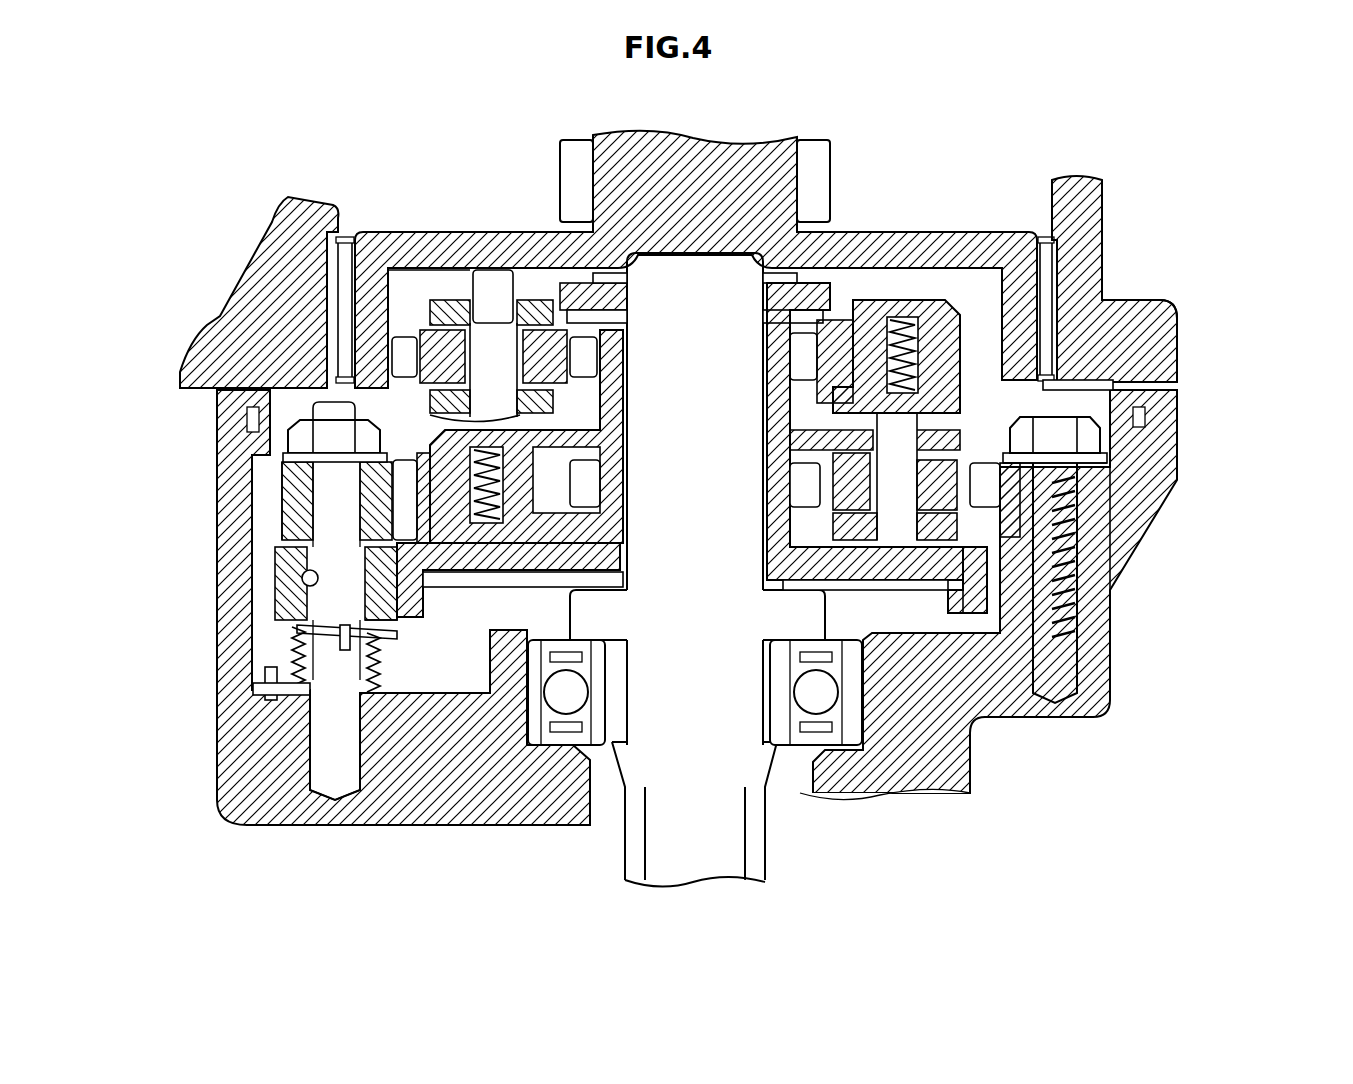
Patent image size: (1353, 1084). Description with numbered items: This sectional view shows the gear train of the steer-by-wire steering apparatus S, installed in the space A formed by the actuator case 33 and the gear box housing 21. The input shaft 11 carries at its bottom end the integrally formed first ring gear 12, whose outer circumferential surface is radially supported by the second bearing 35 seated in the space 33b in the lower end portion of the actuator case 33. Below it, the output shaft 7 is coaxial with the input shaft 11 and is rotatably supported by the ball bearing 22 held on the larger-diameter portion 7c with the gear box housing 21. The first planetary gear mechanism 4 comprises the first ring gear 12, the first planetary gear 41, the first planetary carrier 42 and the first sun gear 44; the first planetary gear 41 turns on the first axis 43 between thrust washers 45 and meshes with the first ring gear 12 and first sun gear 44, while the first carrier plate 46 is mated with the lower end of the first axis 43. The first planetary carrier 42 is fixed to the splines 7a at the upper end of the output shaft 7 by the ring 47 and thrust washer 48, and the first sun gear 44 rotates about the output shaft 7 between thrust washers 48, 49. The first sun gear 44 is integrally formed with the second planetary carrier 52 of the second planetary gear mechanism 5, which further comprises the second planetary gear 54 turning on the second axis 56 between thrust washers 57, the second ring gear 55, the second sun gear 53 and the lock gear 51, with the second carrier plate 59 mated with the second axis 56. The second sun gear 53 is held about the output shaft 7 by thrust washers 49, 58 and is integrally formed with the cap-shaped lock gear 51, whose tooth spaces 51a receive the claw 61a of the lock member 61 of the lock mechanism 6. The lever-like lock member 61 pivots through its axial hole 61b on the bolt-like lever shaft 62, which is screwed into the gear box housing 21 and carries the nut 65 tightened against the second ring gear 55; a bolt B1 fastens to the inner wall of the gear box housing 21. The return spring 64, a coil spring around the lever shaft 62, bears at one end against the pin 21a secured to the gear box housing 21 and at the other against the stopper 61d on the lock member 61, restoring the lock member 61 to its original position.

The first planetary gear mechanism 4 is at (497, 298).
The first sun gear 44 is at (403, 350).
The first planetary gear 41 is at (428, 350).
The first ring gear 12 is at (405, 298).
The first planetary carrier 42 is at (460, 330).
The apparatus for steering a vehicle S is at (487, 140).
The input shaft 11 is at (718, 178).
The thrust washers 45 is at (440, 308).
The first axis 43 is at (498, 320).
The splines 7a is at (832, 245).
The actuator case 33 is at (1080, 205).
The second bearing 35 is at (345, 360).
The space 33b is at (1090, 315).
The nut 65 is at (283, 423).
The ring 47 is at (622, 282).
The thrust washer 48 is at (612, 320).
The first carrier plate 46 is at (548, 410).
The thrust washer 49 is at (617, 448).
The thrust washers 57 is at (985, 525).
The second carrier plate 59 is at (830, 535).
The thrust washer 58 is at (612, 582).
The lever shaft 62 is at (578, 650).
The second axis 56 is at (1107, 382).
The bolt B1 is at (1092, 432).
The second ring gear 55 is at (303, 432).
The gear box housing 21 is at (1003, 700).
The ball bearing 22 is at (845, 720).
The portion with a larger diameter 7c is at (900, 700).
The space A is at (902, 612).
The output shaft 7 is at (697, 835).
The lock gear 51 is at (570, 903).
The axial hole 61b is at (345, 560).
The lock member 61 is at (287, 597).
The pin 21a is at (330, 700).
The return spring 64 is at (338, 690).
The stopper 61d is at (372, 645).
The claw 61a is at (300, 640).
The tooth spaces 51a is at (405, 575).
The lock mechanism 6 is at (665, 674).
The second sun gear 53 is at (1085, 600).
The second planetary gear 54 is at (1060, 553).
The second planetary carrier 52 is at (1050, 515).
The second planetary gear mechanism 5 is at (1151, 673).